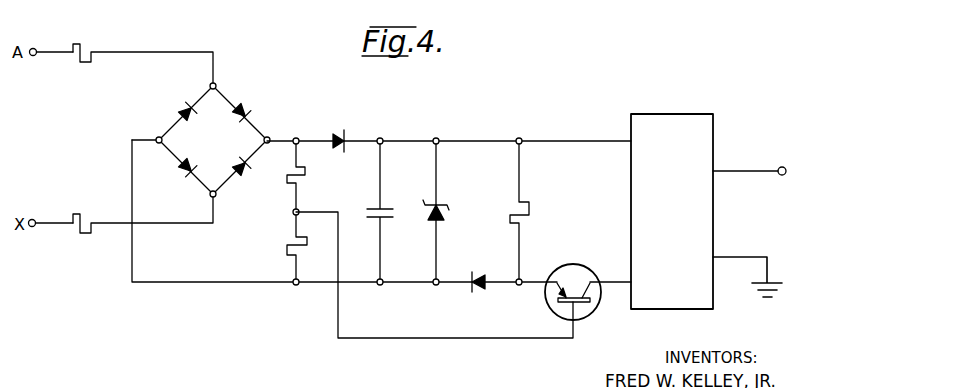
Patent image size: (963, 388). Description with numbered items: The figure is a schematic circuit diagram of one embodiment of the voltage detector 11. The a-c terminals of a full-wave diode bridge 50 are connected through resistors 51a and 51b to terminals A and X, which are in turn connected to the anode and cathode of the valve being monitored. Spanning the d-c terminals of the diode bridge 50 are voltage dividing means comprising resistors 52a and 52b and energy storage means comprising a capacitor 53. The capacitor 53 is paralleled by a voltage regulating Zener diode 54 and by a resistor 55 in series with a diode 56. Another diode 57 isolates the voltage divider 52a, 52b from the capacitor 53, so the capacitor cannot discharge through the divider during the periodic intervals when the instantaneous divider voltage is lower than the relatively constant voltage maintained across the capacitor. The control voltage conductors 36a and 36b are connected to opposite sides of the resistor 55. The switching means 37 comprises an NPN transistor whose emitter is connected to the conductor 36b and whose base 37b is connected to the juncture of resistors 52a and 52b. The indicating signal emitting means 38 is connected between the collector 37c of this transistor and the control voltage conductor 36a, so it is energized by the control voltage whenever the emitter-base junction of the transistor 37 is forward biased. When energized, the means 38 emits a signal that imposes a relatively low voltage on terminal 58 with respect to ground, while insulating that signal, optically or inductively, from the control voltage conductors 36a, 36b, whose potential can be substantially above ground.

The voltage detector 11 is at (256, 339).
The full-wave diode bridge 50 is at (227, 149).
The resistor 51a is at (79, 43).
The resistor 51b is at (86, 235).
The resistor 52a is at (305, 170).
The resistor 52b is at (288, 248).
The capacitor 53 is at (386, 208).
The voltage regulating Zener diode 54 is at (443, 212).
The resistor 55 is at (530, 208).
The diode 56 is at (478, 275).
The diode 57 is at (341, 131).
The control voltage conductor 36a is at (552, 141).
The control voltage conductor 36b is at (528, 285).
The switching means 37 is at (584, 266).
The base 37b is at (468, 340).
The collector 37c is at (615, 284).
The indicating signal emitting means 38 is at (672, 211).
The terminal 58 is at (787, 167).